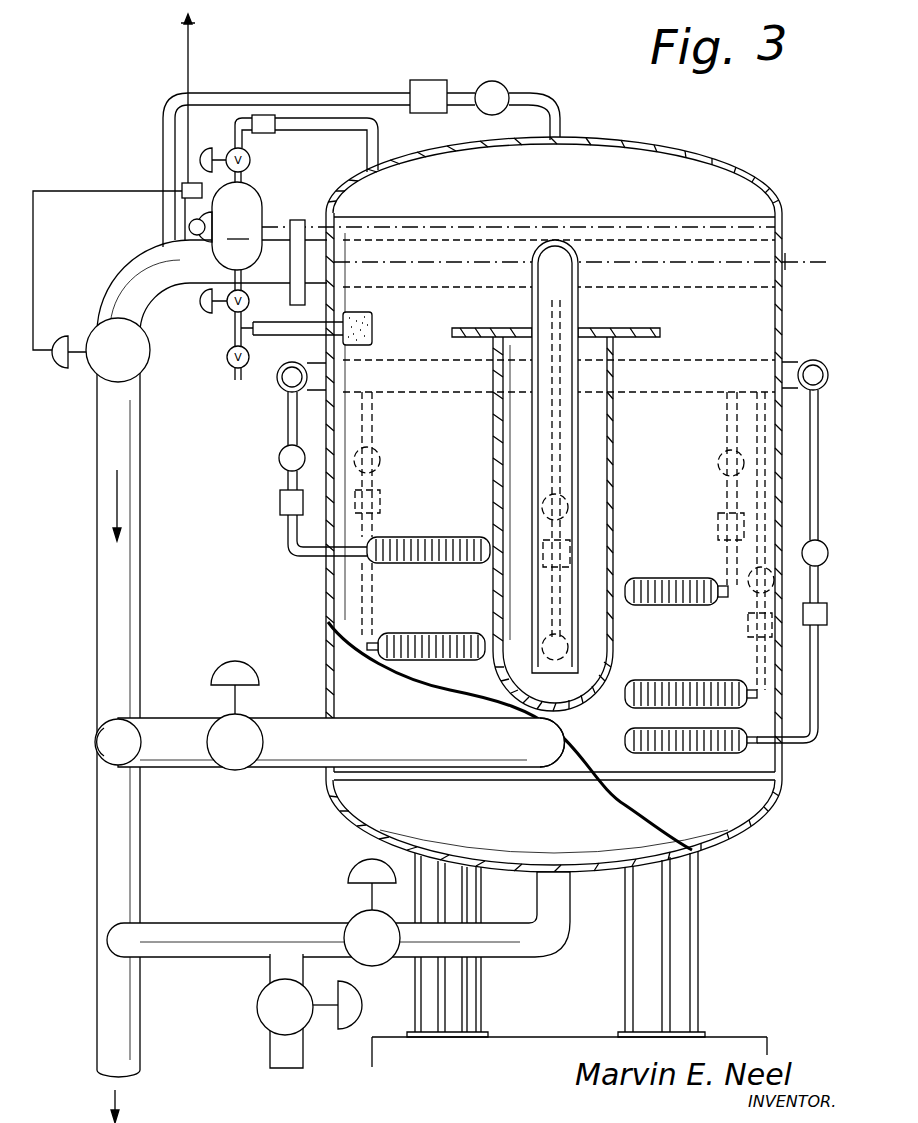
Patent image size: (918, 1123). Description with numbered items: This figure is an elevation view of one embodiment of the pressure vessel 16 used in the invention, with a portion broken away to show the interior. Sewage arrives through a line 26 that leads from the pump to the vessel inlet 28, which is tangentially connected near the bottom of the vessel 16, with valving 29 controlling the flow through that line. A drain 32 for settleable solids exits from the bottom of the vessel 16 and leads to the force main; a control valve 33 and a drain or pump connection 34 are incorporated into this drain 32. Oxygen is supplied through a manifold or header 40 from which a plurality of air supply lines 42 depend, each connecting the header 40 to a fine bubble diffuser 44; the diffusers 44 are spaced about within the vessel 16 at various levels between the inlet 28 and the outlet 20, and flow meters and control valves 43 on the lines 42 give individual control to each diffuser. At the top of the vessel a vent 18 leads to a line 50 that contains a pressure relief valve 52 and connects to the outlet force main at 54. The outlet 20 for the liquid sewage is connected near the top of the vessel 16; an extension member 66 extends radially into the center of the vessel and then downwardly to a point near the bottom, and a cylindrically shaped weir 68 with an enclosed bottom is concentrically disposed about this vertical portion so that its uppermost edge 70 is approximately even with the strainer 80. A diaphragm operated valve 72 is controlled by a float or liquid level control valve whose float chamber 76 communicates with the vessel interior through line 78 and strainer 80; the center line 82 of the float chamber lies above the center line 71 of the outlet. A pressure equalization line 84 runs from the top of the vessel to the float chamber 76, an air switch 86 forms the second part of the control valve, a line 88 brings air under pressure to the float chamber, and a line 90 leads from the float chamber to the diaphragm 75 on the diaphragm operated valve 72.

The vessel 16 is at (639, 188).
The vent 18 is at (563, 130).
The outlet 20 is at (278, 245).
The line 26 is at (112, 755).
The vessel inlet 28 is at (552, 762).
The valving 29 is at (195, 770).
The drain 32 is at (512, 955).
The control valve 33 is at (355, 912).
The drain or pump connection 34 is at (268, 1048).
The manifold or header 40 is at (817, 358).
The air supply lines 42 is at (287, 424).
The flow meters and control valves 43 is at (278, 460).
The fine bubble diffuser 44 is at (445, 537).
The line 50 is at (362, 93).
The pressure relief valve 52 is at (497, 80).
The connection to force main 54 is at (168, 247).
The extension member 66 is at (552, 245).
The weir 68 is at (613, 533).
The uppermost edge 70 is at (640, 330).
The center line of the outlet 71 is at (602, 260).
The diaphragm operated valve 72 is at (90, 368).
The diaphragm 75 is at (55, 337).
The float chamber 76 is at (225, 226).
The line 78 is at (281, 322).
The strainer 80 is at (375, 319).
The center line of the float chamber 82 is at (440, 226).
The pressure equalization line 84 is at (283, 118).
The air switch 86 is at (180, 200).
The line 88 is at (190, 56).
The line 90 is at (50, 191).